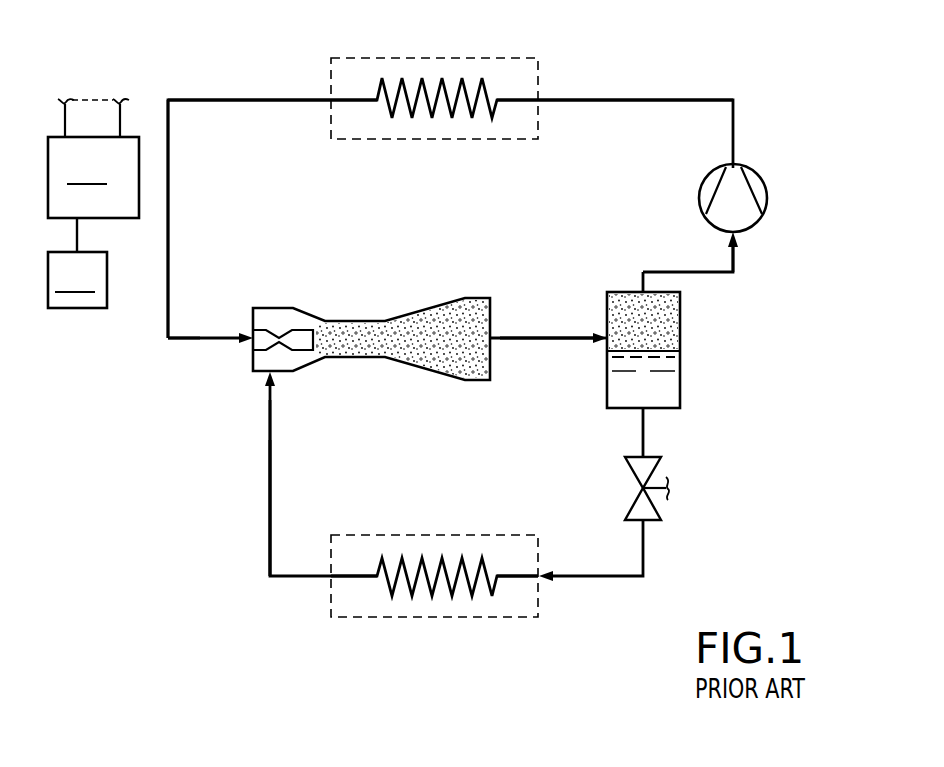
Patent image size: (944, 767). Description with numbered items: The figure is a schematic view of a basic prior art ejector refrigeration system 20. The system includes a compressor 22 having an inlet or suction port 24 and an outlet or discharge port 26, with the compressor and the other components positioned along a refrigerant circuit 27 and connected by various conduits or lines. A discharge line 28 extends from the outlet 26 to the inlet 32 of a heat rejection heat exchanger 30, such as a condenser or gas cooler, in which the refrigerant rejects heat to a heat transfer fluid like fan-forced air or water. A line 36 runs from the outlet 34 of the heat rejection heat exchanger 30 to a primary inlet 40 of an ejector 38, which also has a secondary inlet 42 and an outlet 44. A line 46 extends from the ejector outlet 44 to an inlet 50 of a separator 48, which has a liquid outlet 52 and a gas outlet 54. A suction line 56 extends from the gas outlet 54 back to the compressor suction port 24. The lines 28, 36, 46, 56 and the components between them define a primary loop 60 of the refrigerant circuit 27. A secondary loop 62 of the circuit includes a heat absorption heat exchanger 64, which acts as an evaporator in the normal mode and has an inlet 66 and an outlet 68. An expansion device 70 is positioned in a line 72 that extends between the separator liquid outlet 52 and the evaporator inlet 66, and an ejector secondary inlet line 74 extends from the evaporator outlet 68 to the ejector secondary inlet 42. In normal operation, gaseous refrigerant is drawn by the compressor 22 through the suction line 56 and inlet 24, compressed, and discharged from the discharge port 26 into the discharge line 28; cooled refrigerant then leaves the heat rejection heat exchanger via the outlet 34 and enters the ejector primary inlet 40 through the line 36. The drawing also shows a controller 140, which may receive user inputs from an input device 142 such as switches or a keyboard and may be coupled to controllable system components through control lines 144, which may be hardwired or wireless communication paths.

The ejector refrigeration system 20 is at (770, 91).
The compressor 22 is at (800, 186).
The inlet (suction port) 24 is at (736, 233).
The outlet (discharge port) 26 is at (741, 165).
The refrigerant circuit 27 is at (248, 88).
The discharge line 28 is at (676, 100).
The heat rejection heat exchanger 30 is at (480, 68).
The inlet of heat rejection heat exchanger 32 is at (539, 100).
The outlet of heat rejection heat exchanger 34 is at (331, 100).
The line 36 is at (168, 207).
The ejector 38 is at (380, 295).
The primary inlet 40 is at (252, 340).
The secondary inlet 42 is at (272, 373).
The ejector outlet 44 is at (506, 337).
The line 46 is at (543, 340).
The separator 48 is at (700, 358).
The separator inlet 50 is at (607, 337).
The liquid outlet 52 is at (645, 410).
The gas outlet 54 is at (645, 291).
The suction line 56 is at (727, 272).
The primary loop 60 is at (170, 350).
The secondary loop 62 is at (254, 497).
The heat absorption heat exchanger 64 is at (455, 636).
The evaporator inlet 66 is at (542, 578).
The evaporator outlet 68 is at (330, 578).
The expansion device 70 is at (700, 482).
The line 72 is at (645, 545).
The ejector secondary inlet line 74 is at (272, 470).
The controller 140 is at (93, 177).
The input device 142 is at (77, 263).
The control lines 144 is at (122, 108).